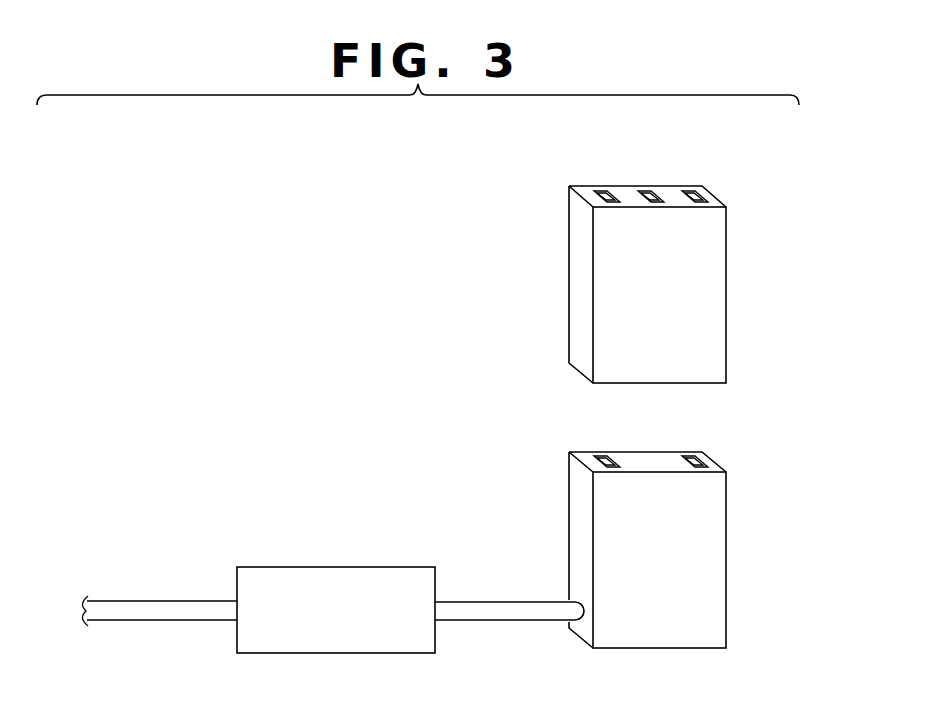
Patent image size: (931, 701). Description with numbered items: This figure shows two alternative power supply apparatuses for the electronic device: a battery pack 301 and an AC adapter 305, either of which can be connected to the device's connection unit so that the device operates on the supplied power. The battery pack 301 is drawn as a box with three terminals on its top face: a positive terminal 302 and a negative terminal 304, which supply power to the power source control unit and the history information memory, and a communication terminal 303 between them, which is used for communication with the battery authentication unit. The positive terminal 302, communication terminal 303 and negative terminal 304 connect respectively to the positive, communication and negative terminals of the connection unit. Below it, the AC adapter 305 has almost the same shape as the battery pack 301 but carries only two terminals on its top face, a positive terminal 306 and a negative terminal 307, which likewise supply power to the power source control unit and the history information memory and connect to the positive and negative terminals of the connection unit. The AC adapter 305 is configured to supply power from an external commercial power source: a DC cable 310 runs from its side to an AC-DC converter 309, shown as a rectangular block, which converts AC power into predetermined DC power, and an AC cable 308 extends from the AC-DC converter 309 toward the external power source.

The battery pack 301 is at (727, 243).
The positive terminal 302 is at (605, 189).
The communication terminal 303 is at (651, 189).
The negative terminal 304 is at (695, 189).
The AC adapter 305 is at (727, 508).
The positive terminal 306 is at (605, 454).
The negative terminal 307 is at (695, 454).
The AC cable 308 is at (168, 600).
The AC-DC converter 309 is at (338, 566).
The DC cable 310 is at (521, 601).